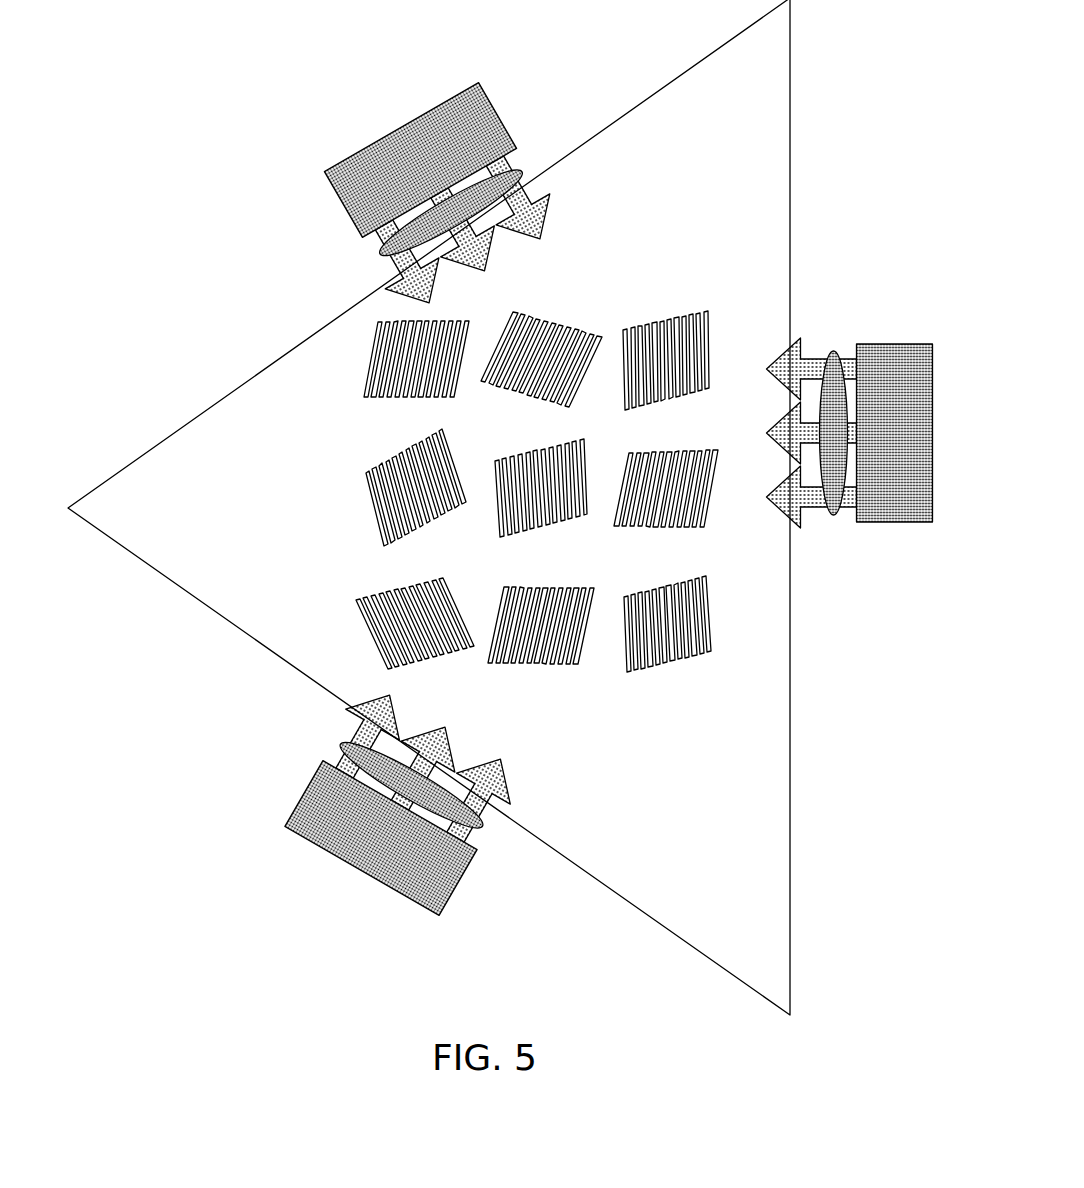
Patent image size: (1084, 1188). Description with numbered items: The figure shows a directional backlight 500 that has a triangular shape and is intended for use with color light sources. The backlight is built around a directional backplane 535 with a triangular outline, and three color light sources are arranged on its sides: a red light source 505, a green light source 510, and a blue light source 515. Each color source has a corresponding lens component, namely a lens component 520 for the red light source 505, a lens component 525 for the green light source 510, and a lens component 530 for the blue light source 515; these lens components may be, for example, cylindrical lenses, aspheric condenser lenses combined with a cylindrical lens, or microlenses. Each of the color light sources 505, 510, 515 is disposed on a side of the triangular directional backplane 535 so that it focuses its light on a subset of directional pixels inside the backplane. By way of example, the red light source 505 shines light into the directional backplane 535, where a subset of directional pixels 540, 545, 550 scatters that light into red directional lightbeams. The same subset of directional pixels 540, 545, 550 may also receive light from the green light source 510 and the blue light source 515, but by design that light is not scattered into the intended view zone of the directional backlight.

The directional backlight 500 is at (493, 70).
The red light source 505 is at (362, 148).
The green light source 510 is at (463, 879).
The blue light source 515 is at (880, 343).
The lens component 520 is at (521, 175).
The lens component 525 is at (484, 823).
The lens component 530 is at (833, 515).
The directional backplane 535 is at (200, 435).
The directional pixel 540 is at (373, 337).
The directional pixel 545 is at (568, 340).
The directional pixel 550 is at (657, 338).